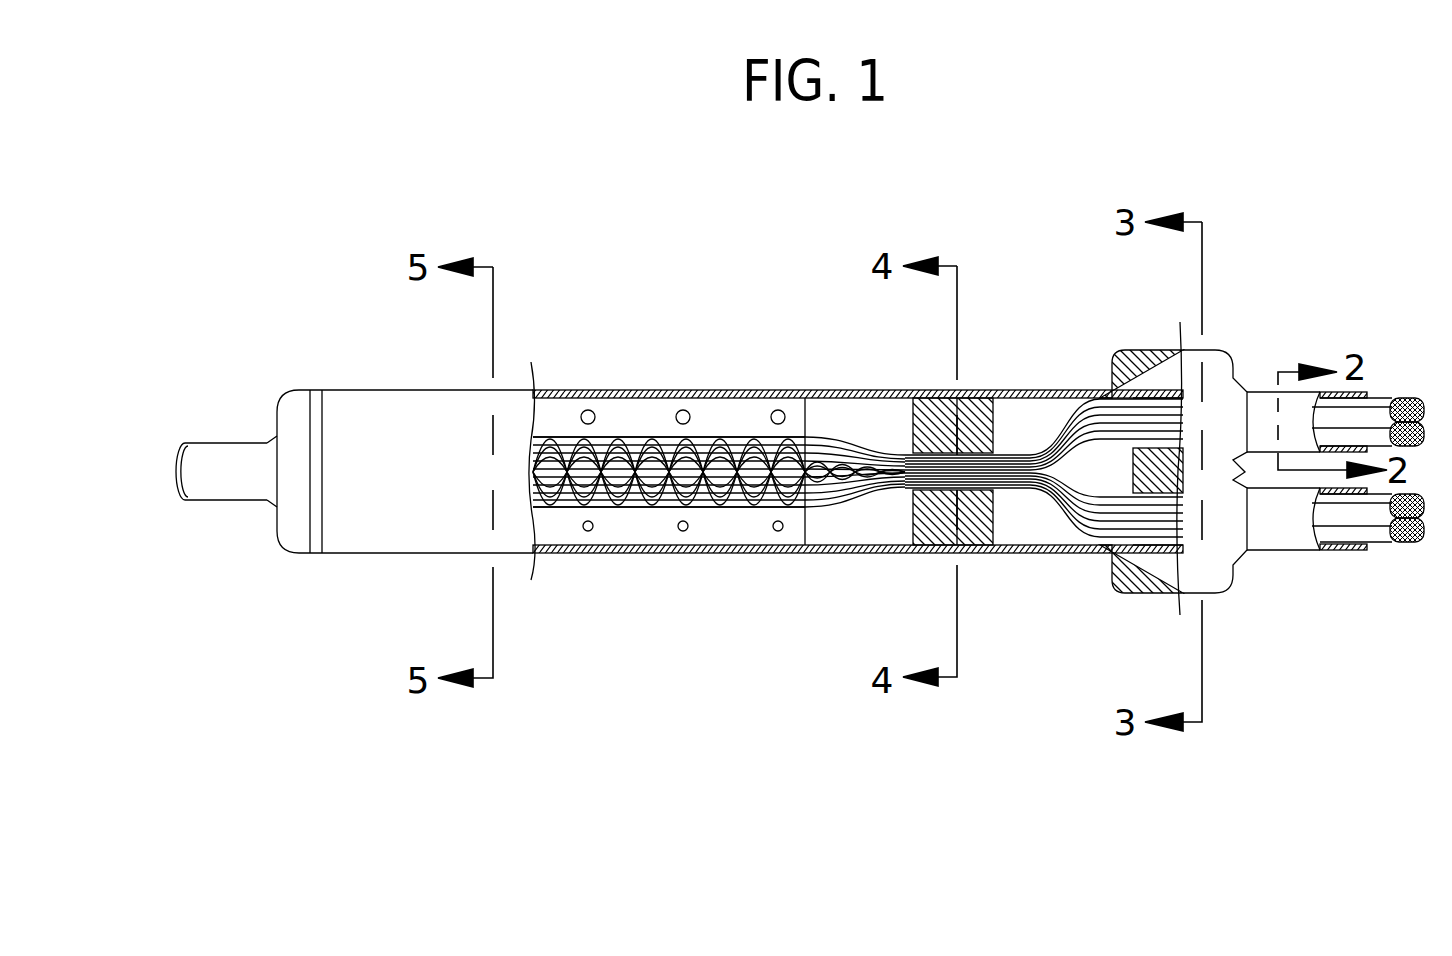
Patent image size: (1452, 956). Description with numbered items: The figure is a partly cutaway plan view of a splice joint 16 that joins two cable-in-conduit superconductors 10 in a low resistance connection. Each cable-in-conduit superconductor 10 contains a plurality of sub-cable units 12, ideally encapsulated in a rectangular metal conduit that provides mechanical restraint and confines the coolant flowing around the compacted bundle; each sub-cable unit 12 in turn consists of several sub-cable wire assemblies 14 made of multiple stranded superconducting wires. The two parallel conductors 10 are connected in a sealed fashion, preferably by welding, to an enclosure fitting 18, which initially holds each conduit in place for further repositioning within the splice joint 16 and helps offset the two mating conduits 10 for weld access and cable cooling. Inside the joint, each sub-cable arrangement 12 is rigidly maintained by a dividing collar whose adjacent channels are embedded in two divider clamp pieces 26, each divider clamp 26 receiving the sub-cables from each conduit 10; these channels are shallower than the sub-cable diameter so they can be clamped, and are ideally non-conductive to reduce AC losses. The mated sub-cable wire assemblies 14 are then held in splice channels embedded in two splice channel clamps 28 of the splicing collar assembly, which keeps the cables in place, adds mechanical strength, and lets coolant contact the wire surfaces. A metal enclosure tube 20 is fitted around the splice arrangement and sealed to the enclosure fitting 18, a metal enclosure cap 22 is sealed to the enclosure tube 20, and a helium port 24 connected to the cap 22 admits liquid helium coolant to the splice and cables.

The cable-in-conduit superconductor 10 is at (1257, 455).
The sub-cable unit 12 is at (1068, 452).
The sub-cable wire assembly 14 is at (643, 508).
The splice joint 16 is at (756, 338).
The enclosure fitting 18 is at (1115, 588).
The metal enclosure tube 20 is at (350, 556).
The metal enclosure cap 22 is at (307, 390).
The helium port 24 is at (228, 442).
The divider clamp piece 26 is at (922, 397).
The splice channel clamp 28 is at (590, 397).